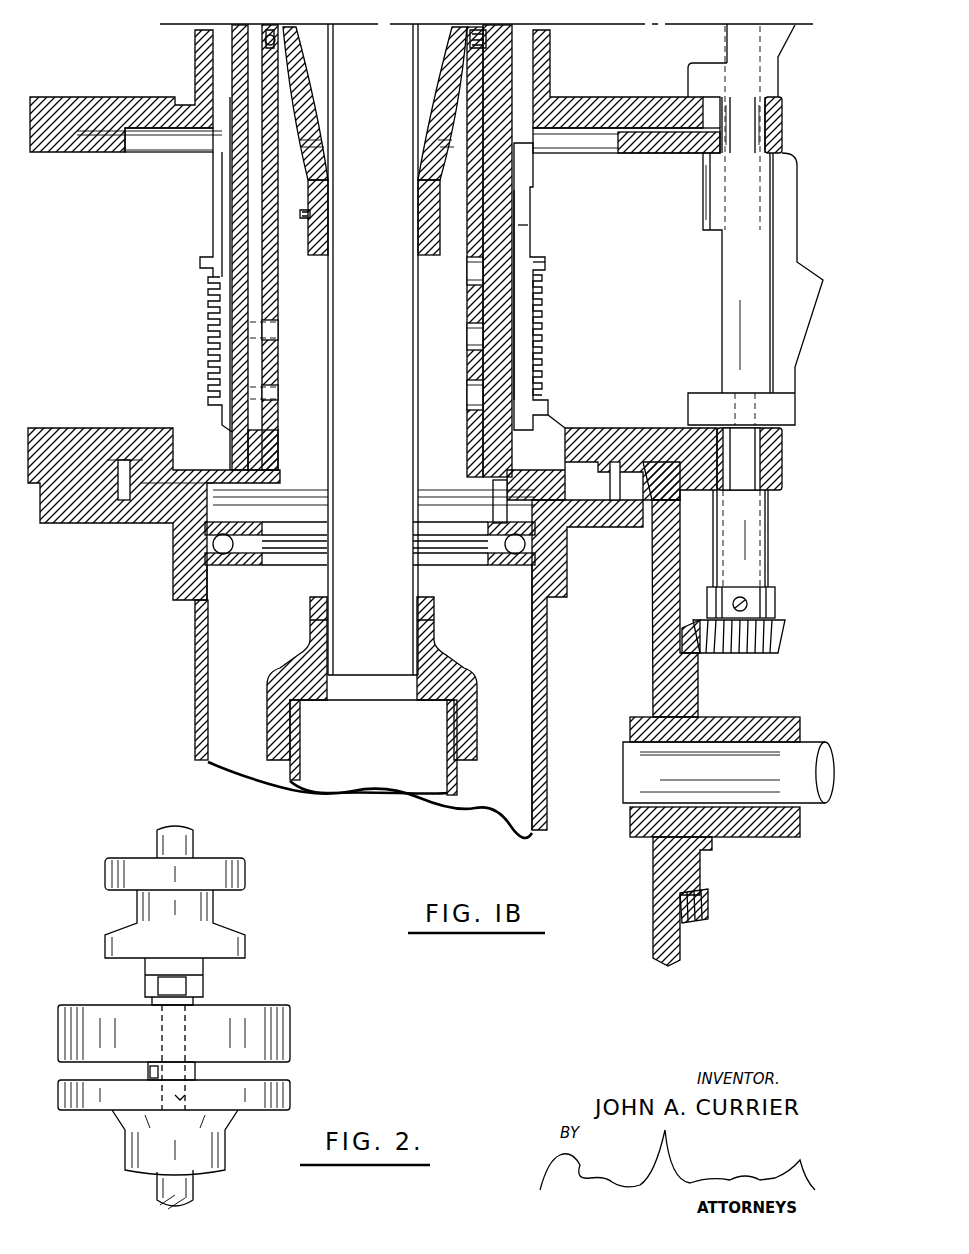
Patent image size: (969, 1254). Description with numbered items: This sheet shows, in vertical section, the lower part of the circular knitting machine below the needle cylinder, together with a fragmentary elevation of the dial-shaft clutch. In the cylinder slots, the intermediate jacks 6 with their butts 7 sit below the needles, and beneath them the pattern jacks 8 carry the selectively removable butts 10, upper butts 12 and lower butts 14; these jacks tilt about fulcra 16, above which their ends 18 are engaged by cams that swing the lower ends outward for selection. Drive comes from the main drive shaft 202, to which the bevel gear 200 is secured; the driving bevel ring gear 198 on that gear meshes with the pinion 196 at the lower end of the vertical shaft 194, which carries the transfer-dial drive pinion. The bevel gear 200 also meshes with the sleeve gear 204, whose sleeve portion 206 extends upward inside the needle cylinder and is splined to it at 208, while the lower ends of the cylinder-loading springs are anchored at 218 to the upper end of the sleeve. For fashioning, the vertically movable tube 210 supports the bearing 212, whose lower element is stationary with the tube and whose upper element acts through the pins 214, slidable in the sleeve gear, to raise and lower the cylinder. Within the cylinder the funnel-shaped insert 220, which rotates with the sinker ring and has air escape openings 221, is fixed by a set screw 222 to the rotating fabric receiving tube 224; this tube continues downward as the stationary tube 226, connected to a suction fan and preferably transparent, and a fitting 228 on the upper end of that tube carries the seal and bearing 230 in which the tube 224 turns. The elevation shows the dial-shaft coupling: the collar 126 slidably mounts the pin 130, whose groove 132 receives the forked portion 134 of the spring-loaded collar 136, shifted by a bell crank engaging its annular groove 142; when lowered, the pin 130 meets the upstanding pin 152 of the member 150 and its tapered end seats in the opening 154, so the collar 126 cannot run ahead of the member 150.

In FIG. 1B, the intermediate jacks 6 is at (533, 70).
In FIG. 1B, the butts 7 is at (536, 145).
In FIG. 1B, the pattern jacks 8 is at (526, 230).
In FIG. 1B, the selectively removable butts 10 is at (537, 366).
In FIG. 1B, the upper butts 12 is at (541, 263).
In FIG. 1B, the lower butts 14 is at (536, 410).
In FIG. 1B, the fulcra 16 is at (520, 209).
In FIG. 1B, the ends 18 is at (532, 165).
In FIG. 1B, the vertical shaft 194 is at (728, 304).
In FIG. 1B, the pinion 196 is at (785, 636).
In FIG. 1B, the driving bevel ring gear 198 is at (700, 910).
In FIG. 1B, the bevel gear 200 is at (652, 540).
In FIG. 1B, the main drive shaft 202 is at (762, 752).
In FIG. 1B, the sleeve gear 204 is at (650, 445).
In FIG. 1B, the sleeve portion 206 is at (472, 432).
In FIG. 1B, the spline 208 is at (250, 290).
In FIG. 1B, the vertically movable tube 210 is at (540, 672).
In FIG. 1B, the bearing 212 is at (508, 573).
In FIG. 1B, the pins 214 is at (490, 497).
In FIG. 1B, the spring anchorage 218 is at (276, 34).
In FIG. 1B, the funnel-shaped insert 220 is at (300, 90).
In FIG. 1B, the air escape openings 221 is at (322, 148).
In FIG. 1B, the set screw 222 is at (320, 214).
In FIG. 1B, the fabric receiving tube 224 is at (333, 42).
In FIG. 1B, the stationary tube 226 is at (458, 784).
In FIG. 1B, the fitting 228 is at (440, 668).
In FIG. 1B, the seal and bearing 230 is at (310, 612).
In FIG. 2, the collar 126 is at (272, 1026).
In FIG. 2, the pin 130 is at (183, 1063).
In FIG. 2, the groove 132 is at (195, 991).
In FIG. 2, the forked portion 134 is at (160, 991).
In FIG. 2, the collar 136 is at (240, 870).
In FIG. 2, the annular groove 142 is at (232, 892).
In FIG. 2, the member 150 is at (290, 1088).
In FIG. 2, the upstanding pin 152 is at (150, 1072).
In FIG. 2, the opening 154 is at (182, 1090).